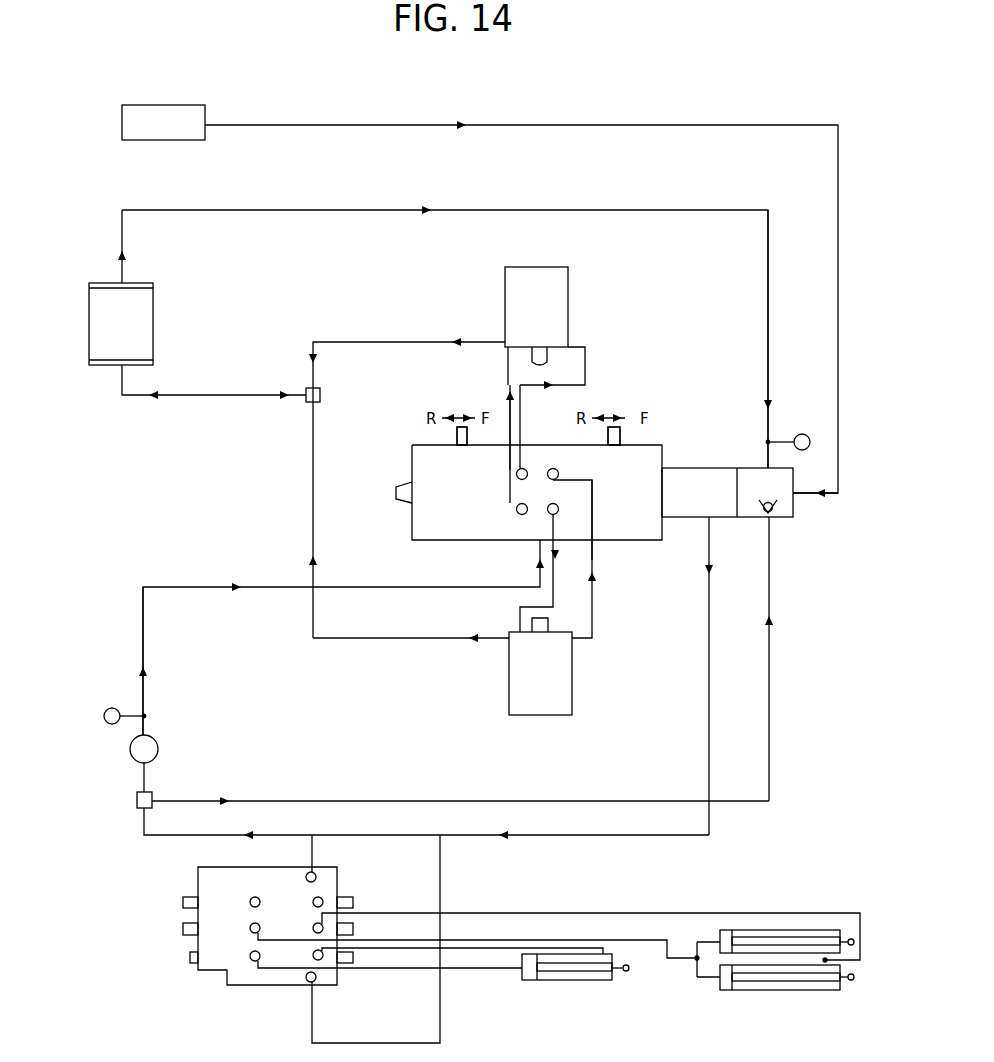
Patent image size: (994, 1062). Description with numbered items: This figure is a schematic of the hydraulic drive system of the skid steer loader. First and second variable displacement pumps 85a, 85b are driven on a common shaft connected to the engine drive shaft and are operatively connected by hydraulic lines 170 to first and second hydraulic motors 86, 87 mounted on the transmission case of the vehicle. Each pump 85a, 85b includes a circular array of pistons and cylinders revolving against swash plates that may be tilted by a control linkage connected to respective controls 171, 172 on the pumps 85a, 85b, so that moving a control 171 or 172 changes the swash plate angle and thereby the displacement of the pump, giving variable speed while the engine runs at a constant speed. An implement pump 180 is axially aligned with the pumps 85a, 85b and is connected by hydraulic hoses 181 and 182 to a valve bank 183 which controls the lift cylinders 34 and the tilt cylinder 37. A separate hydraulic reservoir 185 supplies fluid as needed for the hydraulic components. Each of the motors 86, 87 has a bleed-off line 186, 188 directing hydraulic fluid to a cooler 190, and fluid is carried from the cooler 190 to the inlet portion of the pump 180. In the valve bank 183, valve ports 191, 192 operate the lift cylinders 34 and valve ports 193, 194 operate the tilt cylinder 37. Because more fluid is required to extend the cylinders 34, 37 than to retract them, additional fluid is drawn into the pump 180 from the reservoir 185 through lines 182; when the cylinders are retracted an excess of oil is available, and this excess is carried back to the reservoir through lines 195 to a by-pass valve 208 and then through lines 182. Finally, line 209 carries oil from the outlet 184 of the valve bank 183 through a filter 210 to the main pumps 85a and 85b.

The lift cylinders 34 is at (792, 980).
The tilt cylinder 37 is at (560, 975).
The first variable displacement pump 85a is at (484, 517).
The second variable displacement pump 85b is at (650, 517).
The first hydraulic motor 86 is at (557, 297).
The second hydraulic motor 87 is at (554, 683).
The hydraulic lines 170 is at (510, 388).
The control 171 is at (462, 437).
The control 172 is at (616, 437).
The implement pump 180 is at (703, 468).
The hydraulic hose 181 is at (709, 710).
The hydraulic hose 182 is at (385, 125).
The valve bank 183 is at (232, 880).
The outlet 184 is at (316, 872).
The hydraulic reservoir 185 is at (185, 113).
The bleed-off line 186 is at (388, 342).
The bleed-off line 188 is at (382, 640).
The cooler 190 is at (138, 325).
The valve port 191 is at (802, 434).
The valve port 192 is at (314, 925).
The valve port 193 is at (256, 962).
The valve port 194 is at (323, 960).
The lines 195 is at (412, 800).
The by-pass valve 208 is at (776, 515).
The line 209 is at (143, 632).
The filter 210 is at (150, 751).